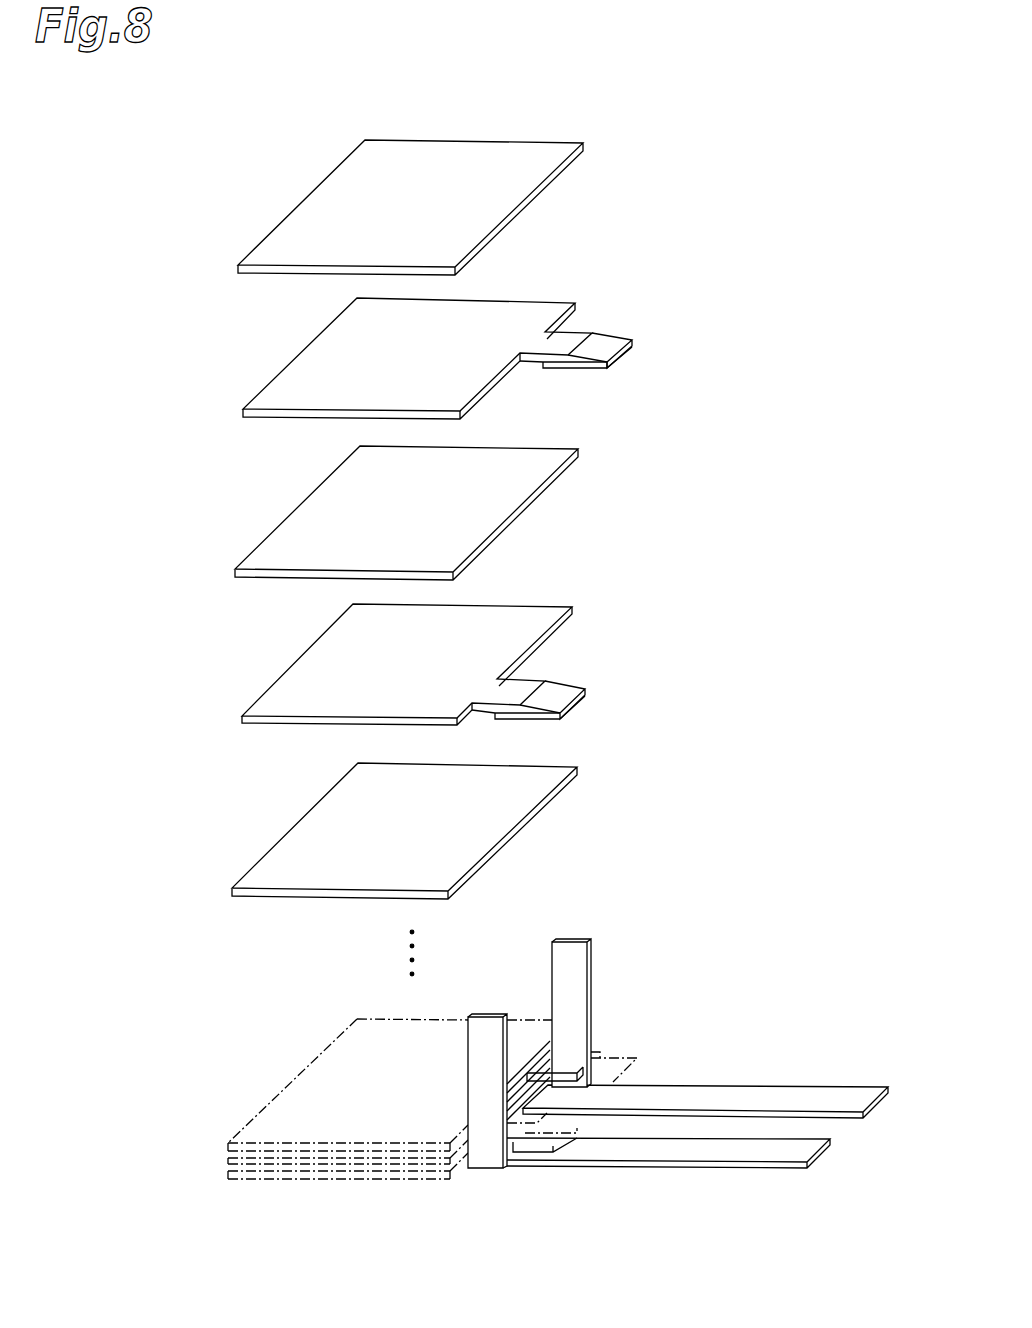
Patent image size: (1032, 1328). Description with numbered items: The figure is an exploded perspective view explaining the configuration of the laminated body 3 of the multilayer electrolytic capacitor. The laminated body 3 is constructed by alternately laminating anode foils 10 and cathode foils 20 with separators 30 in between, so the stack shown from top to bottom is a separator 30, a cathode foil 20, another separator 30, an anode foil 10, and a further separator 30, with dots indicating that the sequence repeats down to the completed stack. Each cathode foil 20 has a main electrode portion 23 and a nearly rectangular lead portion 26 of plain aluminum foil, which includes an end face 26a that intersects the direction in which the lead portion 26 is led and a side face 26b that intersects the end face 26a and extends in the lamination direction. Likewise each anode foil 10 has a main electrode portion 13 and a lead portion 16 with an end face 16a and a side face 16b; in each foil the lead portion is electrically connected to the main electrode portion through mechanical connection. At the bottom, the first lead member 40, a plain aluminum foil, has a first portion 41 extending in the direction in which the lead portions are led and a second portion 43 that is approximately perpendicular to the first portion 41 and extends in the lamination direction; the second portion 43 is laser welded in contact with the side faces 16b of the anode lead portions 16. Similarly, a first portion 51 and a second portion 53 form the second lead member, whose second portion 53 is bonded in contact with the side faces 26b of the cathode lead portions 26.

The laminated body 3 is at (176, 95).
The separator 30 is at (282, 218).
The cathode foil 20 is at (495, 297).
The main electrode portion 23 is at (332, 362).
The lead portion 26 is at (602, 343).
The end face 26a is at (628, 355).
The side face 26b is at (633, 342).
The anode foil 10 is at (497, 600).
The main electrode portion 13 is at (328, 667).
The lead portion 16 is at (560, 687).
The end face 16a is at (577, 703).
The side face 16b is at (532, 720).
The first lead member 40 is at (563, 1240).
The first portion 41 is at (568, 1165).
The second portion 43 is at (483, 1145).
The first portion 51 is at (683, 972).
The second portion 53 is at (593, 990).